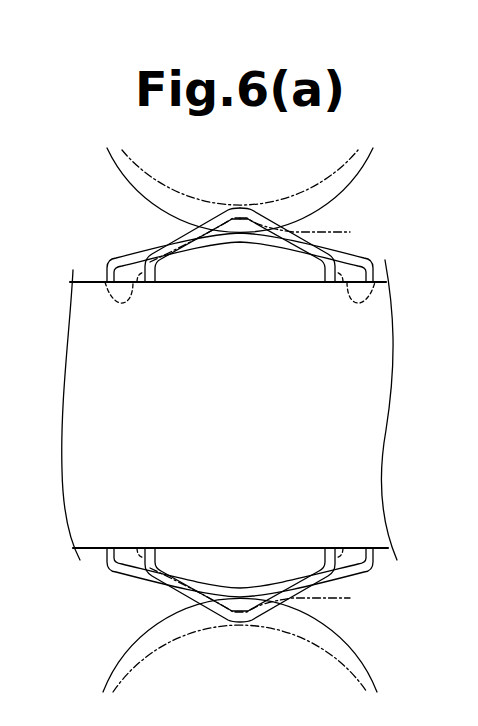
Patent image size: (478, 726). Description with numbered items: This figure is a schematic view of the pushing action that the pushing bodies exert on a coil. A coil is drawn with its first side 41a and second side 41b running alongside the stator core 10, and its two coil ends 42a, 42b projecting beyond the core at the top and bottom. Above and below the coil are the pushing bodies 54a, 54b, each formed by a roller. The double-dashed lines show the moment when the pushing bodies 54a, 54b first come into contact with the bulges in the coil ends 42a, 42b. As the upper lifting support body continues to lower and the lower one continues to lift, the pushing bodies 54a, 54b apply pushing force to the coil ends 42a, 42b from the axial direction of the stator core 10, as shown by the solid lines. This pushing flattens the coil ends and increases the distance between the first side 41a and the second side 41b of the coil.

The stator core 10 is at (93, 297).
The first side 41a is at (166, 273).
The second side 41b is at (314, 273).
The coil end 42a is at (341, 258).
The coil end 42b is at (341, 576).
The pushing body 54a is at (341, 185).
The pushing body 54b is at (341, 645).